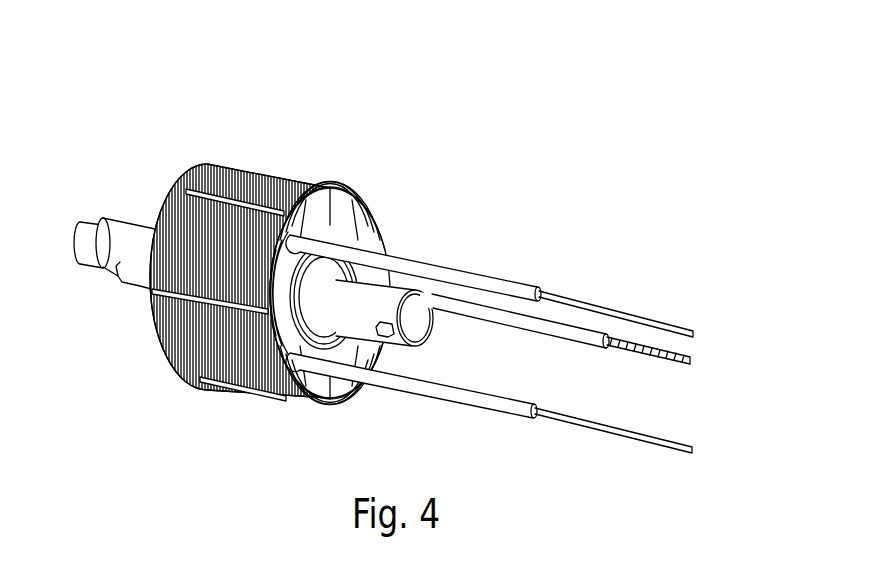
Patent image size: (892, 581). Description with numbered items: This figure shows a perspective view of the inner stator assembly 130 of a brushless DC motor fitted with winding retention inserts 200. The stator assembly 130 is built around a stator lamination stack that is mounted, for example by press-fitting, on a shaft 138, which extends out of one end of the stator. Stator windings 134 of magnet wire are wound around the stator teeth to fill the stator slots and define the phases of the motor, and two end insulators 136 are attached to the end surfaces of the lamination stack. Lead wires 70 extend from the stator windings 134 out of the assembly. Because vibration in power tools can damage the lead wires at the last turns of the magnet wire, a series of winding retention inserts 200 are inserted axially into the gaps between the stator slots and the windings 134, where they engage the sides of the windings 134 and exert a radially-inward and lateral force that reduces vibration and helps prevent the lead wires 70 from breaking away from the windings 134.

The stator assembly 130 is at (383, 242).
The lead wires 70 is at (498, 288).
The stator windings 134 is at (242, 393).
The end insulators 136 is at (322, 197).
The shaft 138 is at (118, 258).
The winding retention inserts 200 is at (188, 189).